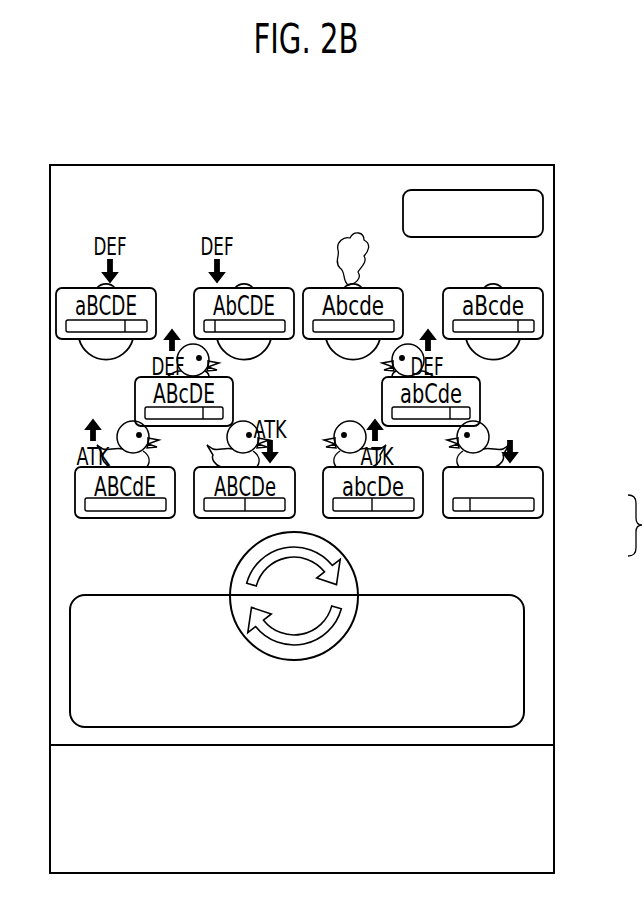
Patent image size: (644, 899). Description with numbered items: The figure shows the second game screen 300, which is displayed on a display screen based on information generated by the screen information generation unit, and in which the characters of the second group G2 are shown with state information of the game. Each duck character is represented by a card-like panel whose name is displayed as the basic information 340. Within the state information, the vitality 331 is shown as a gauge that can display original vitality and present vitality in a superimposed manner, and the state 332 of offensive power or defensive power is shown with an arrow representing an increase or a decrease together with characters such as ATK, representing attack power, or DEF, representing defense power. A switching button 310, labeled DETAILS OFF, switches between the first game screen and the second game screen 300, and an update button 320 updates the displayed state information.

The second group G2 is at (0, 323).
The second game screen 300 is at (521, 164).
The switching button 310 is at (450, 189).
The update button 320 is at (237, 565).
The vitality 331 is at (465, 512).
The state of offensive power or defensive power 332 is at (518, 452).
The basic information 340 is at (452, 487).